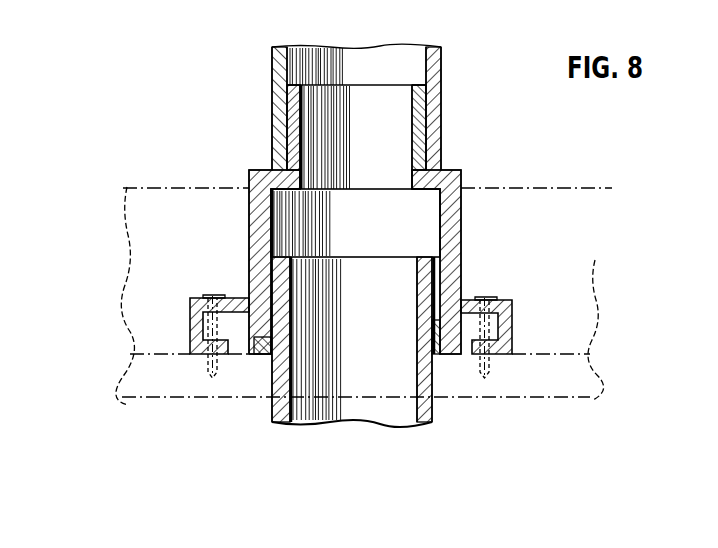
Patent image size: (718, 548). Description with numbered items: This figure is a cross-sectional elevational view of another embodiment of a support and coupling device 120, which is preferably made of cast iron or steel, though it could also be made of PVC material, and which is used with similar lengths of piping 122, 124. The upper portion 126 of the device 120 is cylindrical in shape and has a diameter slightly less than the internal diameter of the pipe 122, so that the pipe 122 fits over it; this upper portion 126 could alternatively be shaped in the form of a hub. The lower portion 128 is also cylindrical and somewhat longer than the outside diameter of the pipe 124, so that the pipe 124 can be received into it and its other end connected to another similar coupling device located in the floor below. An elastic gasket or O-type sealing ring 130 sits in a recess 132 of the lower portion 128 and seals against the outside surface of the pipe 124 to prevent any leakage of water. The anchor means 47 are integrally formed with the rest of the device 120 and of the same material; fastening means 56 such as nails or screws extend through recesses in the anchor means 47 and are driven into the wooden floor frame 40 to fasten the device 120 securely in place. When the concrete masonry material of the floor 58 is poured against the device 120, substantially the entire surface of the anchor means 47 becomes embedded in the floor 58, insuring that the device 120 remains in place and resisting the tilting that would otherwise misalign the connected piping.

The wooden floor frame 40 is at (158, 372).
The anchor means 47 is at (538, 313).
The fastening means 56 is at (213, 296).
The floor 58 is at (148, 224).
The support and coupling device 120 is at (447, 172).
The pipe 122 is at (280, 68).
The pipe 124 is at (432, 409).
The upper portion 126 is at (292, 112).
The lower portion 128 is at (452, 250).
The sealing ring 130 is at (262, 347).
The recess 132 is at (432, 323).